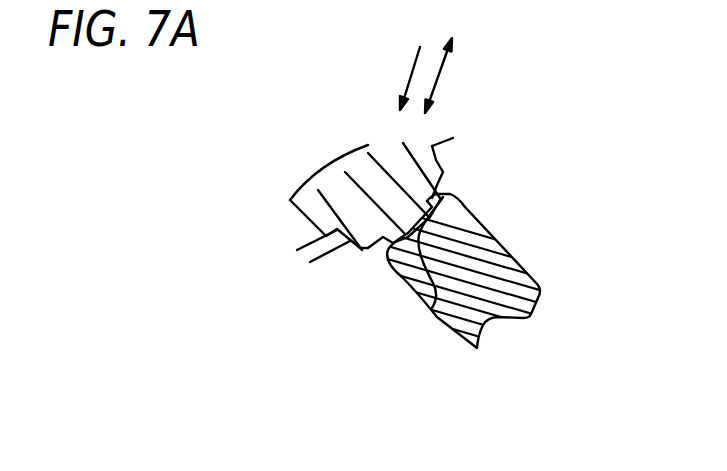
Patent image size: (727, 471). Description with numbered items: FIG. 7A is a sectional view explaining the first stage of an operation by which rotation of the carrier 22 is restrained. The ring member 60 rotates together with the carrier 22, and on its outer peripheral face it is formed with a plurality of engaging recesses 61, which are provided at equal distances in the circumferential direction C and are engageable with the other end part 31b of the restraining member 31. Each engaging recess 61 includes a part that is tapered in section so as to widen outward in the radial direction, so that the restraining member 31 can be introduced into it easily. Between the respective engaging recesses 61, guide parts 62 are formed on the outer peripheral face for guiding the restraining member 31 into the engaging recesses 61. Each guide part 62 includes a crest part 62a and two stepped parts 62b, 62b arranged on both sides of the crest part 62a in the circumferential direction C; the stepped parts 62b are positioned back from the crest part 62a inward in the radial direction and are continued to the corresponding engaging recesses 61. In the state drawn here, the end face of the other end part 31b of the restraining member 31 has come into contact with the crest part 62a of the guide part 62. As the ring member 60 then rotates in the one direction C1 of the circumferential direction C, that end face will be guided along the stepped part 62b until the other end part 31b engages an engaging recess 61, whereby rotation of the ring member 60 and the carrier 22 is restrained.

The carrier 22 is at (287, 182).
The restraining member 31 is at (541, 264).
The other end part of the restraining member 31b is at (463, 208).
The ring member 60 is at (315, 270).
The engaging recess 61 is at (449, 152).
The guide part 62 is at (372, 310).
The crest part 62a is at (410, 267).
The stepped part 62b is at (462, 369).
The one direction of the circumferential direction C1 is at (411, 72).
The circumferential direction C is at (438, 78).